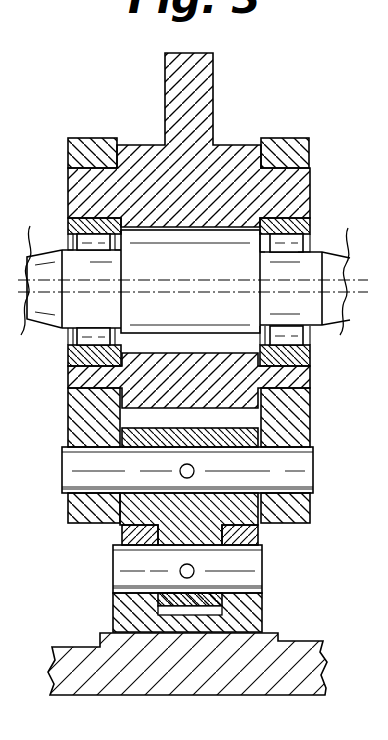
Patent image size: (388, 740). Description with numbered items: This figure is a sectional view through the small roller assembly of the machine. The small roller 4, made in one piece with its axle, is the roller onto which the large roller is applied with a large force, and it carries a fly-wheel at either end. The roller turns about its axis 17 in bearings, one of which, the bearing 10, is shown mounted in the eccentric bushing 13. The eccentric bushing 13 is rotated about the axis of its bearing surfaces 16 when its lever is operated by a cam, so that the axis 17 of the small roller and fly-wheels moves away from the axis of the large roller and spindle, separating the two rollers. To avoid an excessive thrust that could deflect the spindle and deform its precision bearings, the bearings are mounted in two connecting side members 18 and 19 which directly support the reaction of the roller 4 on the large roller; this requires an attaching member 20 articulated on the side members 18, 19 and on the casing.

The small roller 4 is at (215, 262).
The bearing 10 is at (88, 340).
The eccentric bushing 13 is at (293, 182).
The bearing surfaces 16 is at (31, 228).
The axis 17 is at (24, 333).
The connecting side member 18 is at (80, 422).
The connecting side member 19 is at (297, 422).
The attaching member 20 is at (137, 508).